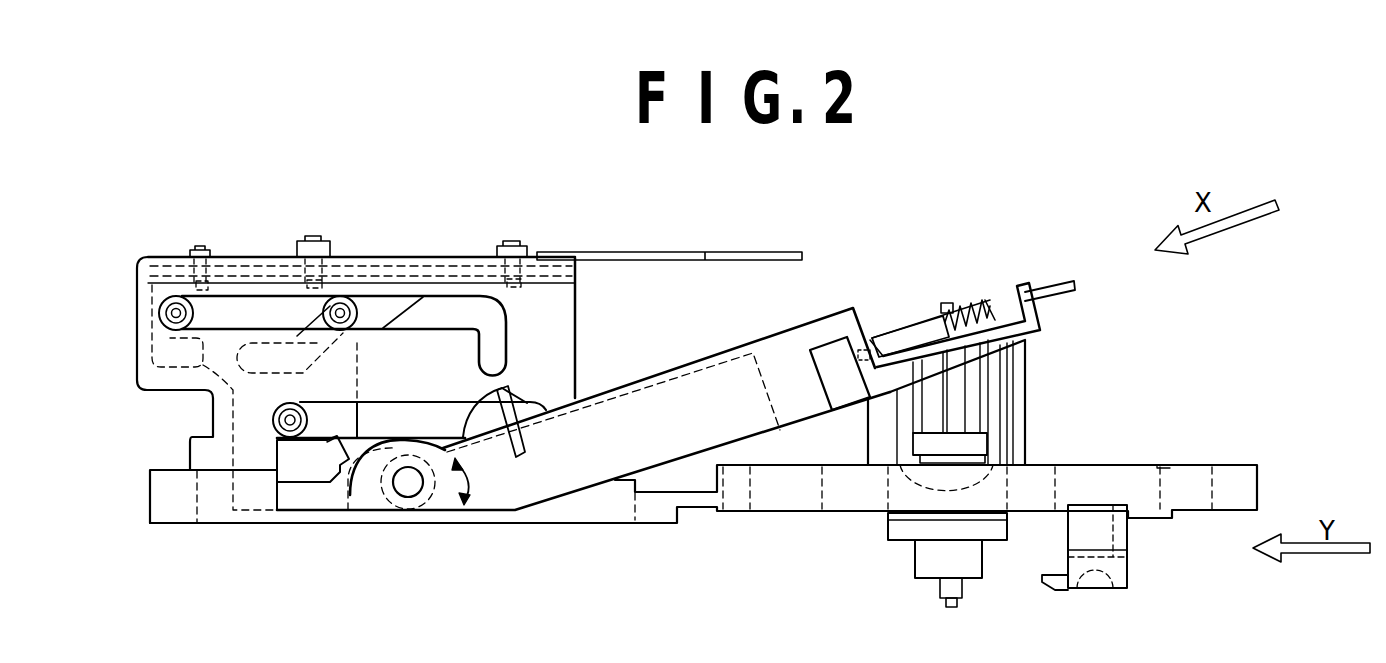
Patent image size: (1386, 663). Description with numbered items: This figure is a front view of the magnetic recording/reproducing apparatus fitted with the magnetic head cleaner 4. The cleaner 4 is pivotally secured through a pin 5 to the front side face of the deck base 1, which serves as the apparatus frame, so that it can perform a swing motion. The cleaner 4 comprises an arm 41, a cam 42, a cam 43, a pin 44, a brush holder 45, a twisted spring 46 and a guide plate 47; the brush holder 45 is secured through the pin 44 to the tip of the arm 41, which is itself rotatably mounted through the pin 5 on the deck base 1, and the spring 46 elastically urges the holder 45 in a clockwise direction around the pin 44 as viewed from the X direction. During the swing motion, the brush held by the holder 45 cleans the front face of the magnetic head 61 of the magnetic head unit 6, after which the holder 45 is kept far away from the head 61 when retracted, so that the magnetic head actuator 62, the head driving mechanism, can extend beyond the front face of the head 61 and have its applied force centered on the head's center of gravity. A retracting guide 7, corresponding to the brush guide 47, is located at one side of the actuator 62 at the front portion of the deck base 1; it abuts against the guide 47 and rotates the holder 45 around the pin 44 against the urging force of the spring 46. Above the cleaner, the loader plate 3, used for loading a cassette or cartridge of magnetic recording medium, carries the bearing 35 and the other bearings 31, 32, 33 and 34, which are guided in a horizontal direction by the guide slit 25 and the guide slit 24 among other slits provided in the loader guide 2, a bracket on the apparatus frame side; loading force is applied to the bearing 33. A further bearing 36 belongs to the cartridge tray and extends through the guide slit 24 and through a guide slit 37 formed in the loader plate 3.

The deck base 1 is at (1257, 487).
The loader guide 2 is at (650, 251).
The loader plate 3 is at (137, 363).
The magnetic head cleaner 4 is at (760, 324).
The pin 5 is at (410, 488).
The magnetic head unit 6 is at (1066, 428).
The retracting guide 7 is at (1128, 575).
The guide slit 24 is at (502, 312).
The guide slit 25 is at (405, 410).
The bearing 31 is at (200, 250).
The bearing 32 is at (508, 246).
The bearing 33 is at (316, 236).
The bearing 34 is at (166, 318).
The bearing 35 is at (273, 422).
The bearing 36 is at (358, 297).
The guide slit 37 is at (296, 338).
The arm 41 is at (558, 470).
The cam 42 is at (310, 480).
The cam 43 is at (503, 390).
The pin 44 is at (858, 352).
The brush holder 45 is at (907, 330).
The twisted spring 46 is at (958, 305).
The guide plate 47 is at (1073, 289).
The magnetic head 61 is at (953, 417).
The magnetic head actuator 62 is at (940, 488).